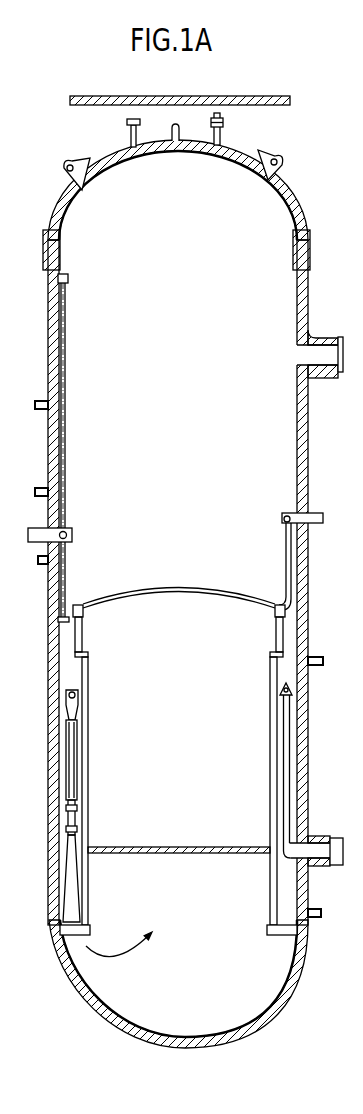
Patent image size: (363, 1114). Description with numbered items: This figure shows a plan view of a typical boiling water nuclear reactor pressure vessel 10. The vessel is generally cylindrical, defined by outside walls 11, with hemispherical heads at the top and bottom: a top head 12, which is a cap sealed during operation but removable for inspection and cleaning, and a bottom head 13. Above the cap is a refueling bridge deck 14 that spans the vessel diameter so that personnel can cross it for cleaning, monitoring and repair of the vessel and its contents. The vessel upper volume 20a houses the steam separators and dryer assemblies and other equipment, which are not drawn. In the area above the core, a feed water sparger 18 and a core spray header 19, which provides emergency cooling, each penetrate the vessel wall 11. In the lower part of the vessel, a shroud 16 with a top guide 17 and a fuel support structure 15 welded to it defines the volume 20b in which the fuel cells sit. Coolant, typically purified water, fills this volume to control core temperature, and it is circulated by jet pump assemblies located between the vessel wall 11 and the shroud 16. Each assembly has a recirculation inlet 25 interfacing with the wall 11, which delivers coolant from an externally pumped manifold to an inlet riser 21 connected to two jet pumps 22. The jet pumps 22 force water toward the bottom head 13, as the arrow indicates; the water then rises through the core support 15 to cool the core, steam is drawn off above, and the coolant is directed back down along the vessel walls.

The reactor pressure vessel 10 is at (349, 584).
The outside walls 11 is at (309, 459).
The top head 12 is at (288, 209).
The bottom head 13 is at (158, 1036).
The refueling bridge deck 14 is at (266, 97).
The fuel support structure 15 is at (178, 848).
The shroud 16 is at (88, 670).
The top guide 17 is at (195, 588).
The feed water sparger 18 is at (323, 520).
The core spray header 19 is at (74, 532).
The vessel upper volume 20a is at (186, 339).
The fuel cell volume 20b is at (180, 697).
The inlet riser 21 is at (292, 768).
The jet pumps 22 is at (80, 768).
The recirculation inlet 25 is at (325, 846).